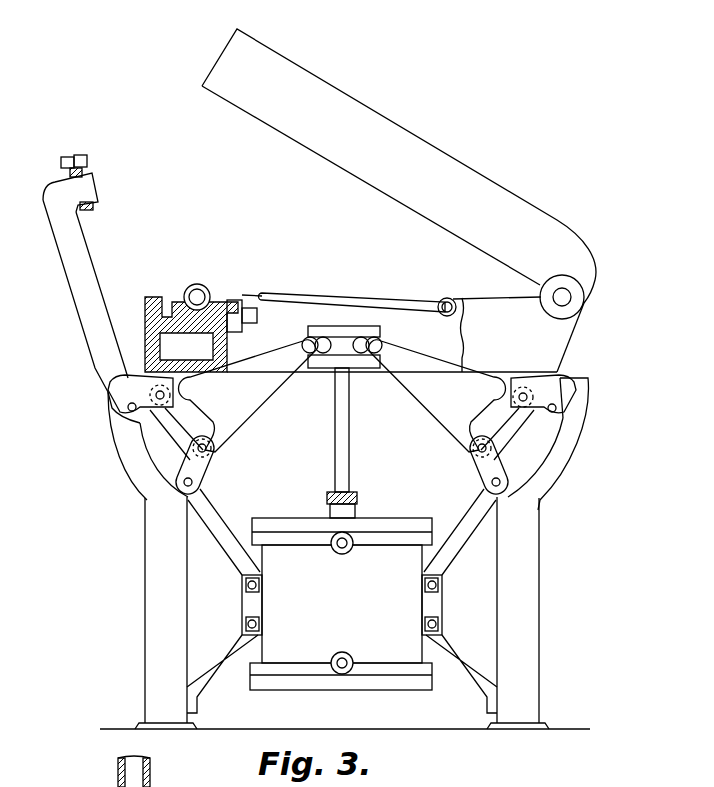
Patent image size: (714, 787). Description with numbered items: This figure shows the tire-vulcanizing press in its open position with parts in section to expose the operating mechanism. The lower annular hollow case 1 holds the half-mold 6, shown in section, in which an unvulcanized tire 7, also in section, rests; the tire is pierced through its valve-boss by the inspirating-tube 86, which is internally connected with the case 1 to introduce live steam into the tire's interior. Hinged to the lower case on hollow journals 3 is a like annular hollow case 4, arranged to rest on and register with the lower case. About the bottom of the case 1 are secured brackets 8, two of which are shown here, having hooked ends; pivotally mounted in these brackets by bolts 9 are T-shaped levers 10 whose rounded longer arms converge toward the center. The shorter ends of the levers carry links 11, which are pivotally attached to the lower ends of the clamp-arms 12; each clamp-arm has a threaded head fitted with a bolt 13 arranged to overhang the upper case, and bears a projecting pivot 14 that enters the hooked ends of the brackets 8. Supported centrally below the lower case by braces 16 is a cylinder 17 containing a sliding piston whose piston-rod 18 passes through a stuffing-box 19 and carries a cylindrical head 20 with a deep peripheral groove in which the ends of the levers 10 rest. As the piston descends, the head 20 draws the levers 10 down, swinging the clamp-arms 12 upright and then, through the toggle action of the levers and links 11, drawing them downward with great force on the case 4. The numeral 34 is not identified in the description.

The annular hollow case 1 is at (405, 334).
The hollow journals 3 is at (557, 273).
The annular hollow case 4 is at (399, 166).
The half-mold 6 is at (182, 295).
The tire 7 is at (197, 287).
The brackets 8 is at (108, 403).
The bolts 9 is at (156, 394).
The T-shaped levers 10 is at (342, 394).
The links 11 is at (342, 465).
The clamp-arms 12 is at (88, 345).
The bolts 13 is at (87, 163).
The projecting pivot 14 is at (132, 418).
The braces 16 is at (342, 601).
The cylinder 17 is at (342, 604).
The piston-rod 18 is at (357, 430).
The stuffing-box 19 is at (357, 503).
The cylindrical head 20 is at (344, 336).
The part 34 is at (123, 771).
The inspirating-tube 86 is at (308, 298).